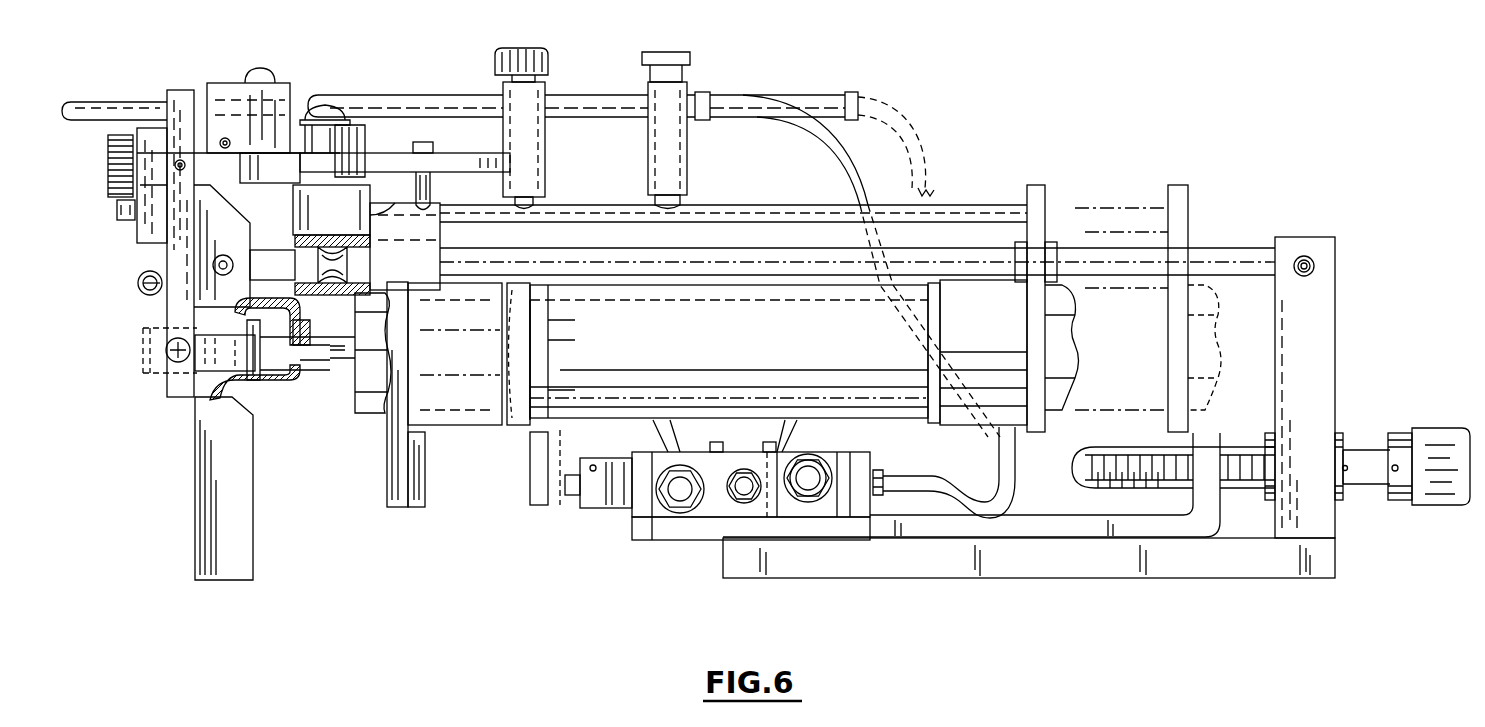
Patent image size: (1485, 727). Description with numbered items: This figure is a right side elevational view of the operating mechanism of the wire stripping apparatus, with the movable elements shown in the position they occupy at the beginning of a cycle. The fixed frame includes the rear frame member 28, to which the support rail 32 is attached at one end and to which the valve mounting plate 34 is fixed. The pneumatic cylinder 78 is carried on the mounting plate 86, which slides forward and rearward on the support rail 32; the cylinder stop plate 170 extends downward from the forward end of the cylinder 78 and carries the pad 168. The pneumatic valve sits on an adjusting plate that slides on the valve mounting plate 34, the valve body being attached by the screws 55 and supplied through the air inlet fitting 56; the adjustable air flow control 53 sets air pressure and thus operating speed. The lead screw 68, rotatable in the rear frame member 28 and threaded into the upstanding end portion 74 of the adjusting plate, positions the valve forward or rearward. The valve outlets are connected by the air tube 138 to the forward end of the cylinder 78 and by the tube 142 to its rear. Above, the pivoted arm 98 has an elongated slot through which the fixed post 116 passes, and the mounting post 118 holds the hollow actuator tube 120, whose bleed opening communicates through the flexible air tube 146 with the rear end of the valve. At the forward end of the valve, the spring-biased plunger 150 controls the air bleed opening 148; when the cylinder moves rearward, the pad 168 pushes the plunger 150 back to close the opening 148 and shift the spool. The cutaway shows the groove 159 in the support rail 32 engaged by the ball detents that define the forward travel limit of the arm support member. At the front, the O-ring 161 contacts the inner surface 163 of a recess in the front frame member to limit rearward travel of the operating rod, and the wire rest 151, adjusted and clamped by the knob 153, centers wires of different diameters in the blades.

The rear frame member 28 is at (1325, 312).
The support rail 32 is at (1210, 252).
The valve mounting plate 34 is at (1063, 575).
The adjustable air flow control 53 is at (668, 492).
The screws 55 is at (770, 440).
The air inlet fitting 56 is at (737, 495).
The lead screw 68 is at (1240, 480).
The upstanding end portion 74 is at (1042, 520).
The pneumatic cylinder 78 is at (416, 354).
The mounting plate 86 is at (1045, 192).
The arm 98 is at (455, 170).
The fixed post 116 is at (432, 192).
The mounting post 118 is at (537, 153).
The hollow actuator tube 120 is at (373, 95).
The air tube 138 is at (665, 420).
The tube 142 is at (785, 420).
The flexible air tube 146 is at (815, 150).
The air bleed opening 148 is at (600, 462).
The plunger 150 is at (570, 495).
The wire rest 151 is at (160, 115).
The knob 153 is at (112, 190).
The groove 159 is at (330, 250).
The O-ring 161 is at (215, 402).
The inner surface 163 is at (275, 405).
The pad 168 is at (422, 472).
The cylinder stop plate 170 is at (385, 490).